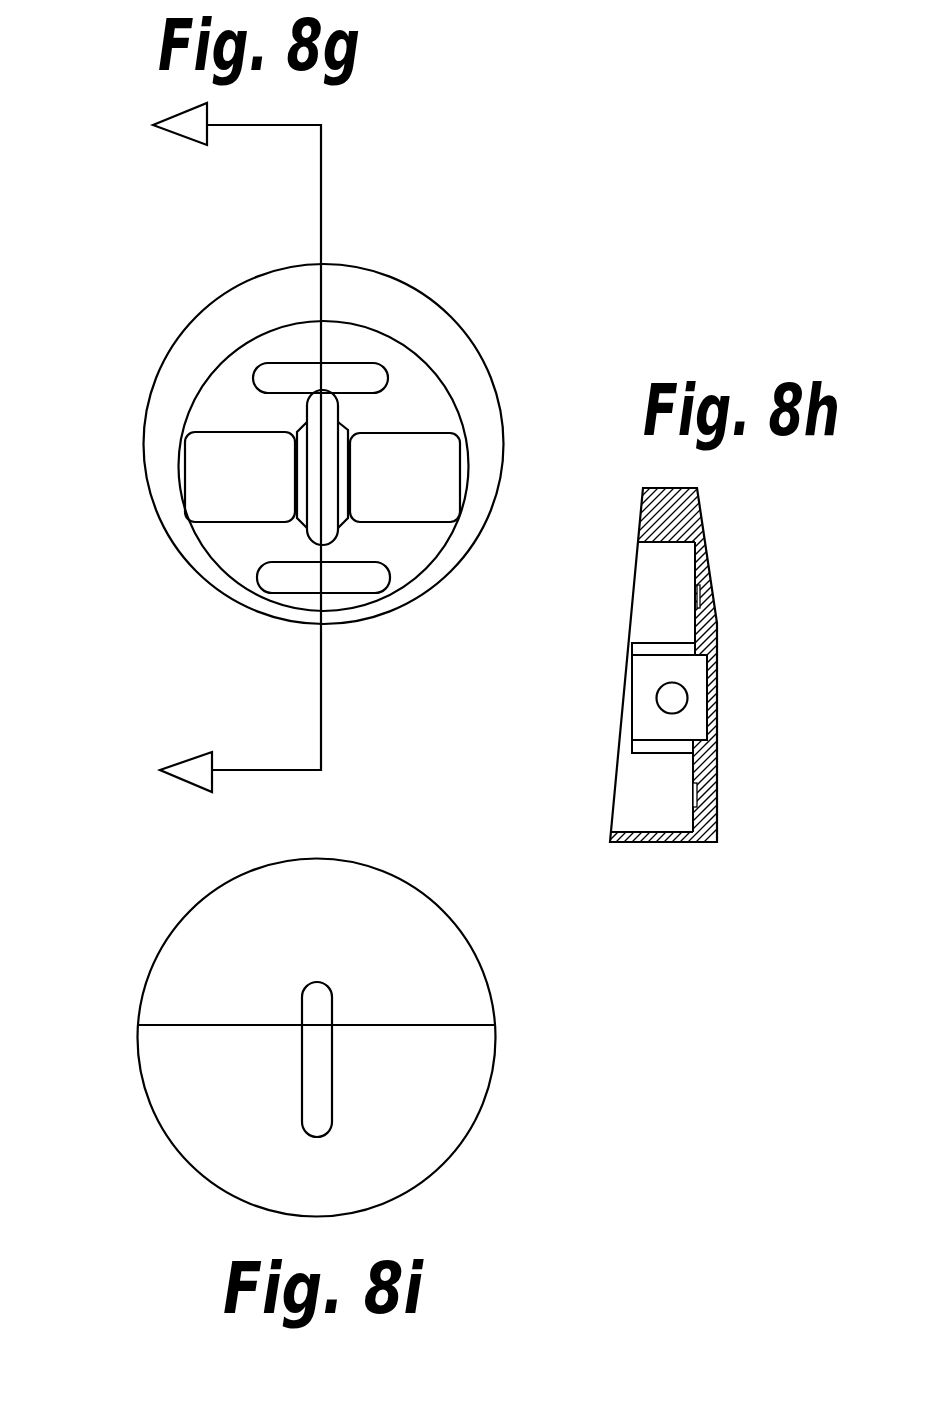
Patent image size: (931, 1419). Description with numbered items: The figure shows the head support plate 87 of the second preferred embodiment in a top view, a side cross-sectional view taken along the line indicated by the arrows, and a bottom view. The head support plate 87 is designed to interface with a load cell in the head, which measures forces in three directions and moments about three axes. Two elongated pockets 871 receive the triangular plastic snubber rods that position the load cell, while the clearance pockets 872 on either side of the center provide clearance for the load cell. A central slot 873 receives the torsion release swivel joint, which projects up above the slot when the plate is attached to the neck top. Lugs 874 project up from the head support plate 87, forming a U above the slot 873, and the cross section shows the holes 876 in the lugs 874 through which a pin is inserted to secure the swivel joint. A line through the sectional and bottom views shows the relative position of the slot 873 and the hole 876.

In FIG. 8G, the head support plate 87 is at (388, 617).
In FIG. 8H, the head support plate 87 is at (688, 847).
In FIG. 8I, the head support plate 87 is at (490, 1092).
In FIG. 8G, the pockets 871 is at (253, 380).
In FIG. 8H, the pockets 871 is at (713, 592).
In FIG. 8G, the clearance pockets 872 is at (183, 447).
In FIG. 8G, the slot 873 is at (330, 392).
In FIG. 8I, the slot 873 is at (328, 1135).
In FIG. 8G, the lugs 874 is at (300, 425).
In FIG. 8H, the lugs 874 is at (627, 700).
In FIG. 8H, the holes 876 is at (668, 682).